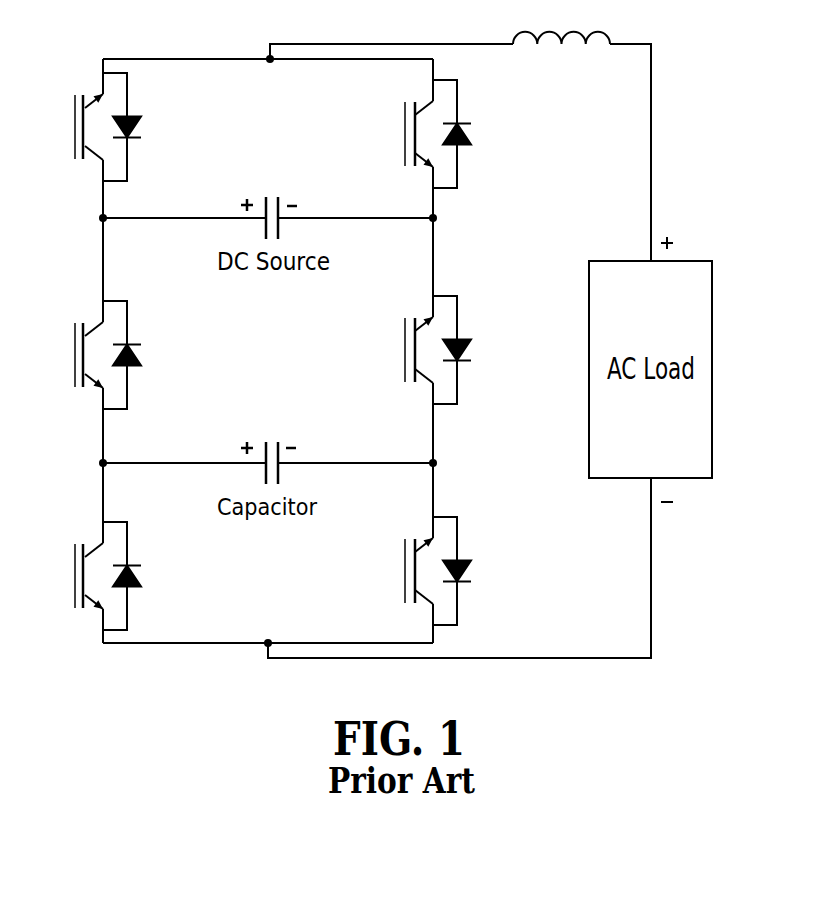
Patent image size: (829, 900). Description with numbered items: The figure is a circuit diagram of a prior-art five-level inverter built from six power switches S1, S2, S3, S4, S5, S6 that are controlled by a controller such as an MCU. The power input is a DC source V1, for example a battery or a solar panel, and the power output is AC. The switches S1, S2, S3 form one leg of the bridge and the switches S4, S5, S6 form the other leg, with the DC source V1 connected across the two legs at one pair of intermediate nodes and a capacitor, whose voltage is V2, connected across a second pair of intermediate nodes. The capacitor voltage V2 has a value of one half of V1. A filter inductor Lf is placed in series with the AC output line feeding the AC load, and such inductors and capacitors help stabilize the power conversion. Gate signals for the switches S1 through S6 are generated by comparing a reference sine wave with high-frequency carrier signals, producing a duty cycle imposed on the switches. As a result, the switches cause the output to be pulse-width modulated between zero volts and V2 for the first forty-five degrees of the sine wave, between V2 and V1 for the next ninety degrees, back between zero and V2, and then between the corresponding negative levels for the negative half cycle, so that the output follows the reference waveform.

The power switch S1 is at (89, 127).
The power switch S2 is at (89, 355).
The power switch S3 is at (89, 576).
The power switch S4 is at (462, 134).
The power switch S5 is at (462, 350).
The power switch S6 is at (462, 571).
The DC source V1 is at (499, 277).
The capacitor voltage V2 is at (268, 440).
The filter inductor Lf is at (561, 58).